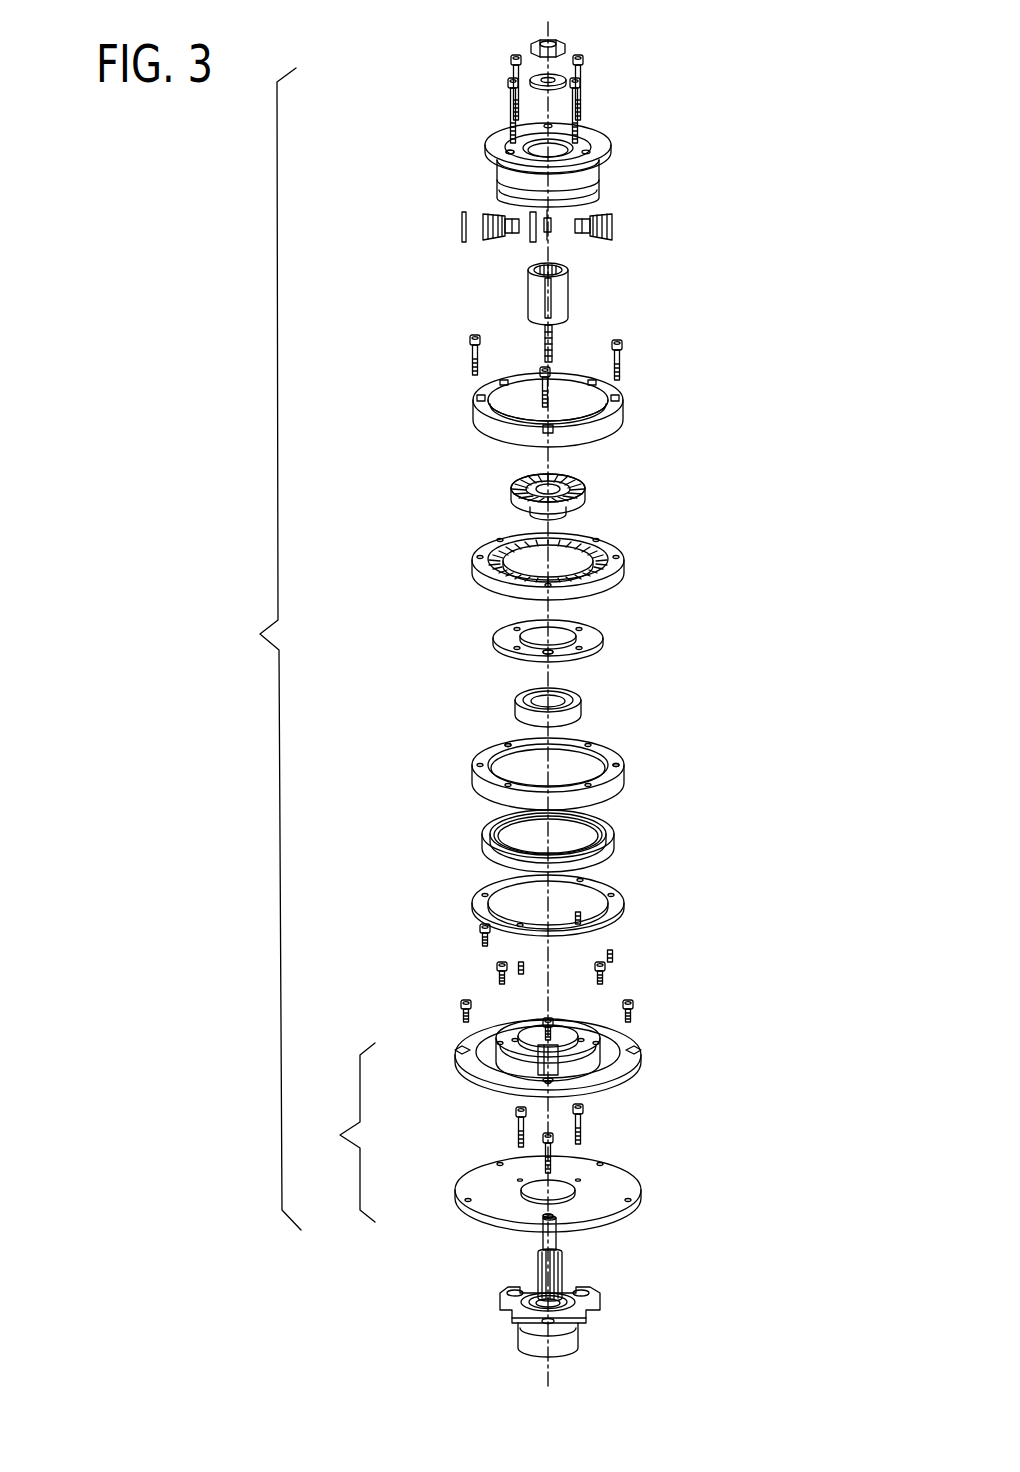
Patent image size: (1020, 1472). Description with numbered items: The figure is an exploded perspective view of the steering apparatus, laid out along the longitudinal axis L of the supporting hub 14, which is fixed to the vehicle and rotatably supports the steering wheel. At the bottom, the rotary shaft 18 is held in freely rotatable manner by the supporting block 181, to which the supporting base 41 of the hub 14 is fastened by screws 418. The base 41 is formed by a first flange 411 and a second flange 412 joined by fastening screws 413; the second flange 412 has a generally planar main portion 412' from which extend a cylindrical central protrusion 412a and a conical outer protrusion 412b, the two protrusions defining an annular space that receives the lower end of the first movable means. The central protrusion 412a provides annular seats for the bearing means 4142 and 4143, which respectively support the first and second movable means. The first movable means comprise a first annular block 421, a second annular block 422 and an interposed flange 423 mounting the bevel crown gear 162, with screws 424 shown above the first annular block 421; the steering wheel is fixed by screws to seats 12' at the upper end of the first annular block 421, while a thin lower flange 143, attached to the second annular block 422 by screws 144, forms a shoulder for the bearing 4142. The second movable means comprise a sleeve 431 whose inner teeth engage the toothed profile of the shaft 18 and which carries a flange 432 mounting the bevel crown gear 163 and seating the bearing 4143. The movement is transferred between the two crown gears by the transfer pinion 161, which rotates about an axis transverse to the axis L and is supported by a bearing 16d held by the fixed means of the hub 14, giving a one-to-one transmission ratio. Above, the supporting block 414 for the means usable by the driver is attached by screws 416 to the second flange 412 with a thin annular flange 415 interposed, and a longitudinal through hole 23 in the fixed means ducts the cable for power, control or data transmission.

The longitudinal axis L is at (540, 30).
The hub 14 is at (266, 649).
The supporting base 41 is at (344, 1132).
The screws 416 is at (588, 70).
The supporting block 414 is at (598, 137).
The longitudinal through hole 23 is at (510, 147).
The transfer pinion 161 is at (490, 222).
The bearing 16d is at (592, 218).
The sleeve 431 is at (568, 265).
The bolts 424 is at (625, 352).
The first annular block 421 is at (480, 417).
The flange 432 is at (515, 490).
The crown gear 163 is at (578, 478).
The crown gear 162 is at (610, 553).
The flange 423 is at (482, 578).
The thin annular flange 415 is at (595, 636).
The bearing means 4143 is at (585, 712).
The seats 12' is at (549, 737).
The second annular block 422 is at (480, 783).
The bearing means 4142 is at (612, 846).
The thin lower flange 143 is at (617, 896).
The screws 144 is at (483, 932).
The fastening screws 413 is at (495, 975).
The second flange 412 is at (606, 1067).
The central protrusion 412a is at (553, 1038).
The outer protrusion 412b is at (462, 1055).
The main portion 412' is at (659, 1057).
The screws 418 is at (518, 1130).
The first flange 411 is at (612, 1192).
The rotary shaft 18 is at (562, 1270).
The supporting block 181 is at (572, 1335).